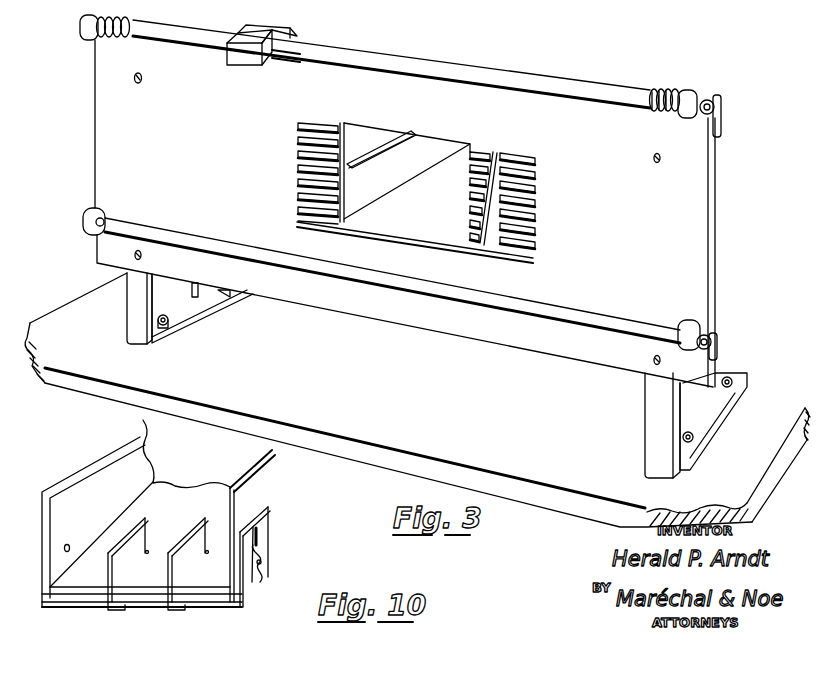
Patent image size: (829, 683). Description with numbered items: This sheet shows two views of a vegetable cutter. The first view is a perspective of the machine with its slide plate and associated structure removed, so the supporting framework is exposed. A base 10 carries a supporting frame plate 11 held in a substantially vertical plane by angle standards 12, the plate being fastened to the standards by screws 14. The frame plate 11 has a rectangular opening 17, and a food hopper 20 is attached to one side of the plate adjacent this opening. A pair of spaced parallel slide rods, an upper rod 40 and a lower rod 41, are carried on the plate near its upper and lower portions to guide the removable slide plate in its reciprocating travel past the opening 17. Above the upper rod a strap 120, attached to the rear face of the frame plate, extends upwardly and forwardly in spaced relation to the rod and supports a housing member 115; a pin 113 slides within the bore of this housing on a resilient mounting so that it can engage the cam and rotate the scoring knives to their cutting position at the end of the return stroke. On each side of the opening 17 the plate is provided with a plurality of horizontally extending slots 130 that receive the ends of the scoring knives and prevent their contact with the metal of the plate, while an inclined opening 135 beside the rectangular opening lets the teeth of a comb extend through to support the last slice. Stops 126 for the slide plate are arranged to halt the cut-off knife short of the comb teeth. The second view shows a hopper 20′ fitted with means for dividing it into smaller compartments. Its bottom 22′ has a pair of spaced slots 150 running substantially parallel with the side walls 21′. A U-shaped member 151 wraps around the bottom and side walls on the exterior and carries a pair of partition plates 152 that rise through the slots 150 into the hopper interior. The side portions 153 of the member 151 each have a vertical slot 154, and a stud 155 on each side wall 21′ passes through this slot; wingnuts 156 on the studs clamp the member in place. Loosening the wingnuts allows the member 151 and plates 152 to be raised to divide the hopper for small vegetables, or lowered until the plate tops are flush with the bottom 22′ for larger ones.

In FIG. 3, the base 10 is at (65, 317).
In FIG. 3, the supporting frame plate 11 is at (100, 128).
In FIG. 3, the angle standards 12 is at (133, 320).
In FIG. 3, the screws 14 is at (143, 84).
In FIG. 3, the rectangular opening 17 is at (430, 142).
In FIG. 3, the food hopper 20 is at (415, 193).
In FIG. 3, the upper slide rod 40 is at (423, 67).
In FIG. 3, the lower slide rod 41 is at (213, 243).
In FIG. 3, the pin 113 is at (288, 57).
In FIG. 3, the housing member 115 is at (247, 57).
In FIG. 3, the strap 120 is at (257, 32).
In FIG. 3, the stops 126 is at (658, 88).
In FIG. 3, the horizontally extending slots 130 is at (296, 138).
In FIG. 3, the opening 135 is at (503, 157).
In FIG. 10, the hopper 20′ is at (142, 465).
In FIG. 10, the side walls 21′ is at (65, 467).
In FIG. 10, the bottom 22′ is at (75, 593).
In FIG. 10, the slots 150 is at (148, 550).
In FIG. 10, the U-shaped member 151 is at (247, 587).
In FIG. 10, the partition plates 152 is at (123, 547).
In FIG. 10, the side portions 153 is at (265, 523).
In FIG. 10, the vertical slot 154 is at (255, 537).
In FIG. 10, the stud 155 is at (67, 545).
In FIG. 10, the wingnuts 156 is at (255, 577).